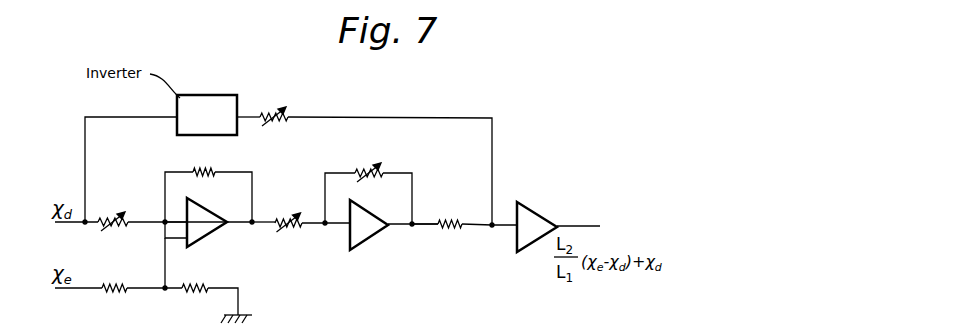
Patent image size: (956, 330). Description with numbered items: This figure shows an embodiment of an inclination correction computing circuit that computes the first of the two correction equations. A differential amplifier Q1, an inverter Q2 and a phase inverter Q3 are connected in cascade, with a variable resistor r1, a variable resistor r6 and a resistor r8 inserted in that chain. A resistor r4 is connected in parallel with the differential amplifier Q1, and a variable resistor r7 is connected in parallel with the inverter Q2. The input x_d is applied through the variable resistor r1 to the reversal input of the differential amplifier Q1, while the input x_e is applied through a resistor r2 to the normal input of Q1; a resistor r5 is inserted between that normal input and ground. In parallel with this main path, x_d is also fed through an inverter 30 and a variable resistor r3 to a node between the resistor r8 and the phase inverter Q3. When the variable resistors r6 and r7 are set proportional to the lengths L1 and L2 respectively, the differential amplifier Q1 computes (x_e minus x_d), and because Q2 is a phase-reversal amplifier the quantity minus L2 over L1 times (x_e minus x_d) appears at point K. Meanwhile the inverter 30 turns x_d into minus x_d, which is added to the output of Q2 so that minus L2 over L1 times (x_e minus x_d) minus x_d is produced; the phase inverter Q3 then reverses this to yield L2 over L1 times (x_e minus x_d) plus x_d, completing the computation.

The inverter 30 is at (209, 96).
The variable resistor r1 is at (113, 207).
The resistor r2 is at (114, 278).
The variable resistor r3 is at (274, 107).
The resistor r4 is at (208, 183).
The resistor r5 is at (195, 278).
The variable resistor r6 is at (284, 237).
The variable resistor r7 is at (368, 182).
The resistor r8 is at (450, 211).
The differential amplifier Q1 is at (207, 222).
The inverter Q2 is at (369, 225).
The phase inverter Q3 is at (537, 227).
The point K is at (420, 226).